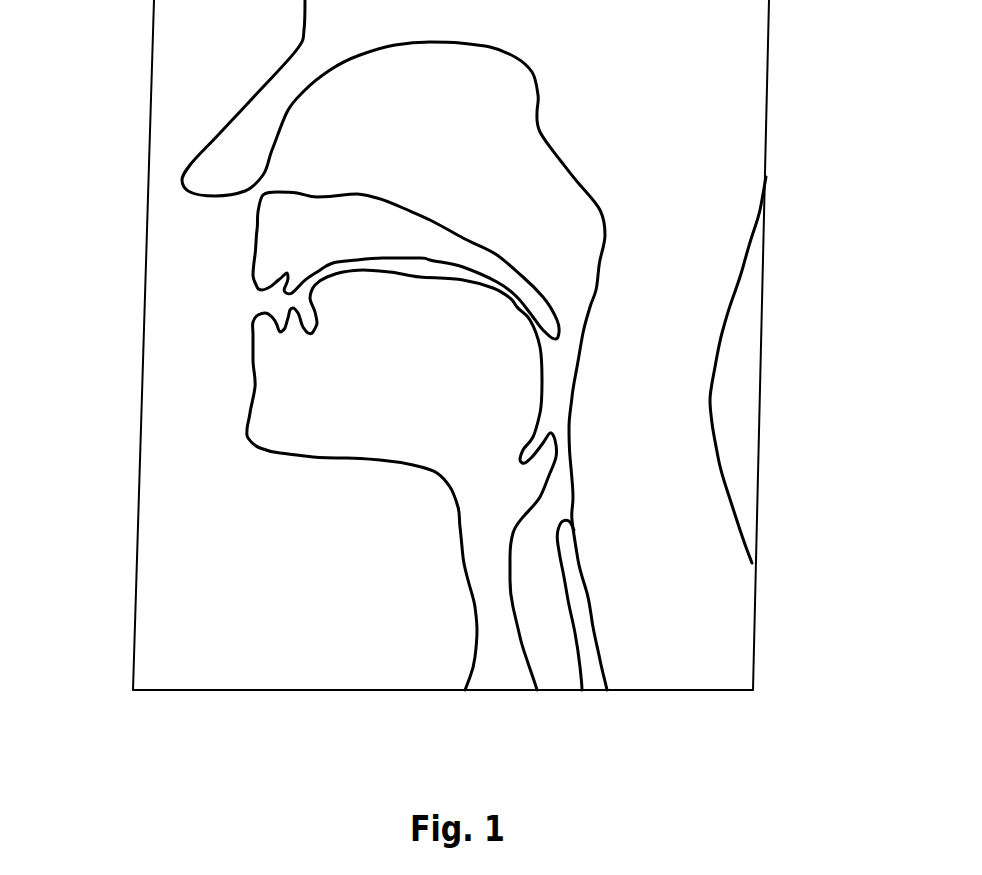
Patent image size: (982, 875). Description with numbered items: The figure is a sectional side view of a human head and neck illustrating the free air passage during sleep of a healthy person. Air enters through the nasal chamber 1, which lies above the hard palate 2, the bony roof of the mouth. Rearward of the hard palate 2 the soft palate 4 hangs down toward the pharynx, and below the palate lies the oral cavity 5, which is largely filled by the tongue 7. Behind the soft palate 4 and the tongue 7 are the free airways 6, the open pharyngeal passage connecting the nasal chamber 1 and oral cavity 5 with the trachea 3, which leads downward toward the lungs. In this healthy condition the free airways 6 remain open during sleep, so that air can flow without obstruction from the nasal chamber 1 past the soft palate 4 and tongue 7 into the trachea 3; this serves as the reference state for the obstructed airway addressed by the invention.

The nasal chamber 1 is at (378, 128).
The hard palate 2 is at (365, 212).
The trachea 3 is at (543, 578).
The soft palate 4 is at (542, 268).
The oral cavity 5 is at (515, 305).
The free airways 6 is at (557, 382).
The tongue 7 is at (477, 375).